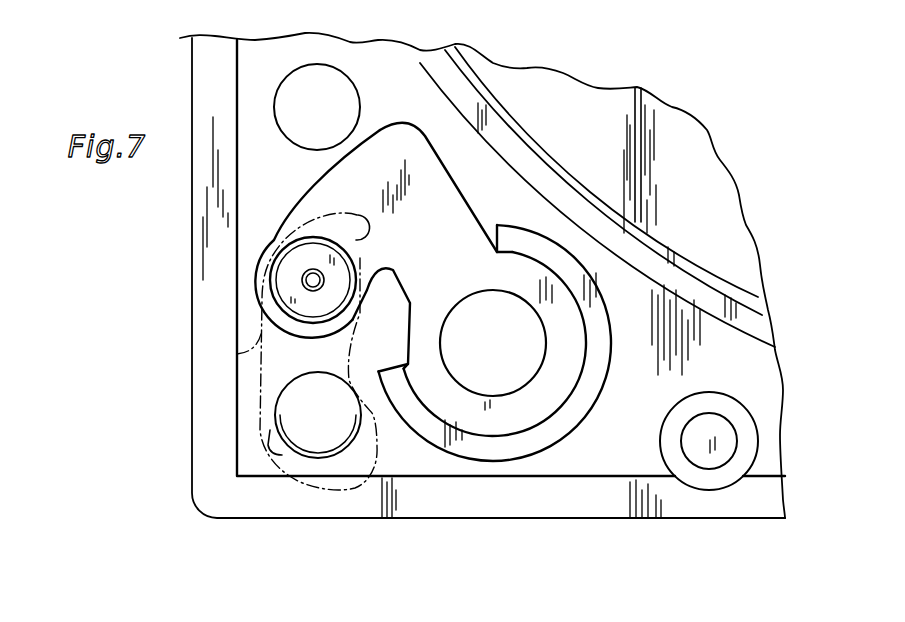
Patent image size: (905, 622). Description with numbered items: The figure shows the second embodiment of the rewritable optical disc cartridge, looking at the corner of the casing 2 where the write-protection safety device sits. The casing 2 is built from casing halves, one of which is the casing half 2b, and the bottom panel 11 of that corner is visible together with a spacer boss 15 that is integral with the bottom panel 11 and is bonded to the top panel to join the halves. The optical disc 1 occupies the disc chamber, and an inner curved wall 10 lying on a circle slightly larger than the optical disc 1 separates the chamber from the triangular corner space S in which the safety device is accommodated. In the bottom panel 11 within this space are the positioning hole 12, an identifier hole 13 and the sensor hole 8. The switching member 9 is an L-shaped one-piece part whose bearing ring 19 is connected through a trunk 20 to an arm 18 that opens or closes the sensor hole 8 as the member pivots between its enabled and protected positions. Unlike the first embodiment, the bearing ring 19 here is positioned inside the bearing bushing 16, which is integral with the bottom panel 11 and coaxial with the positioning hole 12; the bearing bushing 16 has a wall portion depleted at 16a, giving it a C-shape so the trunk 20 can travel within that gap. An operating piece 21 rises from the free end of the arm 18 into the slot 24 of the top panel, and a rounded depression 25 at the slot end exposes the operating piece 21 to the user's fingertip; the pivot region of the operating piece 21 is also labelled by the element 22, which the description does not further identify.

The optical disc 1 is at (688, 152).
The casing 2 is at (680, 522).
The casing half 2b is at (574, 523).
The sensor hole 8 is at (302, 388).
The switching member 9 is at (463, 175).
The inner curved wall 10 is at (565, 197).
The bottom panel 11 is at (400, 458).
The positioning hole 12 is at (520, 340).
The identifier hole 13 is at (312, 83).
The spacer boss 15 is at (718, 403).
The bearing bushing 16 is at (590, 393).
The depleted area 16a is at (400, 362).
The arm 18 is at (323, 187).
The bearing ring 19 is at (537, 243).
The trunk 20 is at (403, 143).
The operating piece 21 is at (297, 257).
The pivot pin 22 is at (325, 283).
The slot 24 is at (237, 354).
The depression 25 is at (370, 240).
The triangular corner space S is at (673, 332).